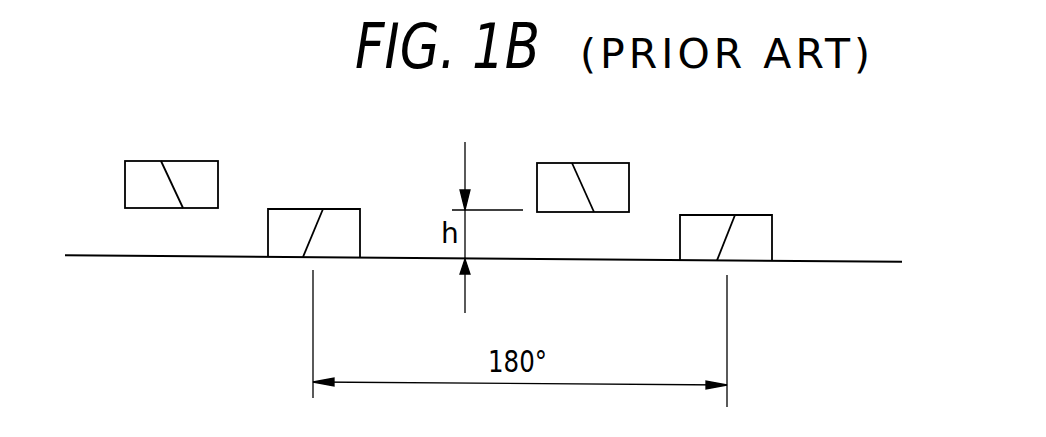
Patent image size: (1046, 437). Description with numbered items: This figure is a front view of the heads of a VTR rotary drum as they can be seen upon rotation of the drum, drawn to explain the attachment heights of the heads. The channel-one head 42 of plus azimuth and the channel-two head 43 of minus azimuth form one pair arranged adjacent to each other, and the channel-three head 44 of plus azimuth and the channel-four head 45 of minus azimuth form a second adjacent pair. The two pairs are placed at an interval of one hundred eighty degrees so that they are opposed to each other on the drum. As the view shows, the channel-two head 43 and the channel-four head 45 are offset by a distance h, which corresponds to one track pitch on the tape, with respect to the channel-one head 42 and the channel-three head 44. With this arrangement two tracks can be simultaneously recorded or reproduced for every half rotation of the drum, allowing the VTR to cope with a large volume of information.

The ch-1 head 42 is at (757, 215).
The ch-2 head 43 is at (612, 163).
The ch-3 head 44 is at (345, 209).
The ch-4 head 45 is at (200, 161).